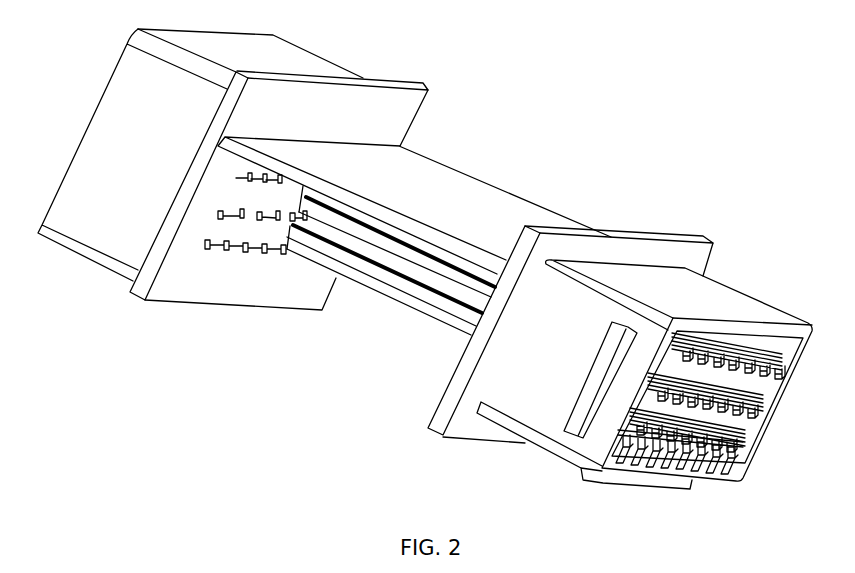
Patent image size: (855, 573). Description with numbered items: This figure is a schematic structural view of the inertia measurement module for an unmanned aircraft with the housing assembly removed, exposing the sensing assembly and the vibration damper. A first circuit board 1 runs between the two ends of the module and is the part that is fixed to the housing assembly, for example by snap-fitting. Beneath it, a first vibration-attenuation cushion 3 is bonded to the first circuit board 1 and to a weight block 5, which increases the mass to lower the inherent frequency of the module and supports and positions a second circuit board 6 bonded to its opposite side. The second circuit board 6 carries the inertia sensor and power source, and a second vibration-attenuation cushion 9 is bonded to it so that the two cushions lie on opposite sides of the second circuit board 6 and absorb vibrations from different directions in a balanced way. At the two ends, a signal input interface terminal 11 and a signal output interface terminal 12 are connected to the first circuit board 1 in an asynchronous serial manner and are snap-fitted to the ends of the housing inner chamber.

The first circuit board 1 is at (443, 175).
The first vibration-attenuation cushion 3 is at (363, 216).
The weight block 5 is at (398, 247).
The second circuit board 6 is at (408, 276).
The second vibration-attenuation cushion 9 is at (432, 305).
The signal input interface terminal 11 is at (122, 100).
The signal output interface terminal 12 is at (720, 297).